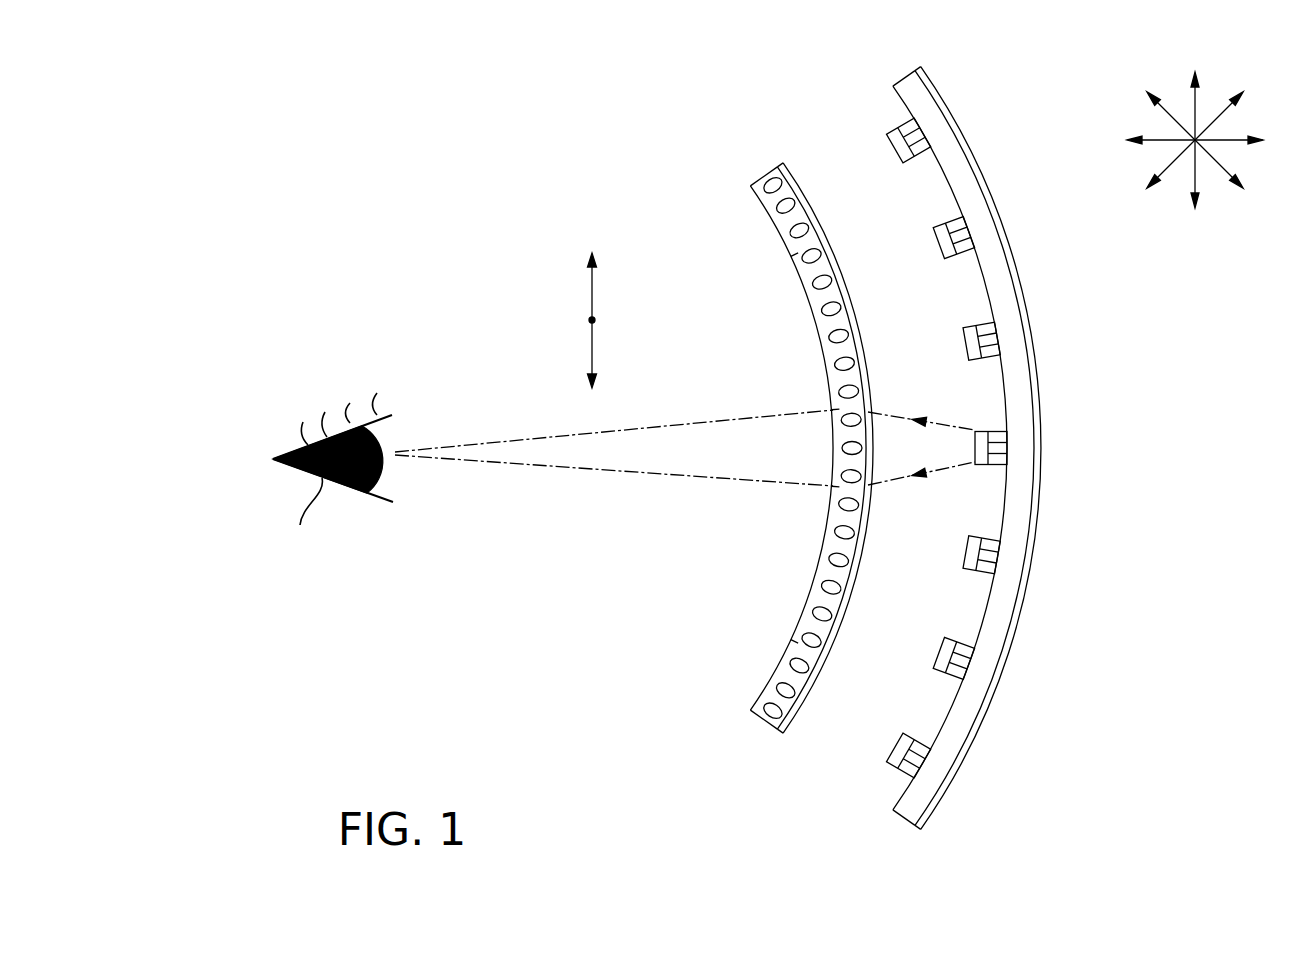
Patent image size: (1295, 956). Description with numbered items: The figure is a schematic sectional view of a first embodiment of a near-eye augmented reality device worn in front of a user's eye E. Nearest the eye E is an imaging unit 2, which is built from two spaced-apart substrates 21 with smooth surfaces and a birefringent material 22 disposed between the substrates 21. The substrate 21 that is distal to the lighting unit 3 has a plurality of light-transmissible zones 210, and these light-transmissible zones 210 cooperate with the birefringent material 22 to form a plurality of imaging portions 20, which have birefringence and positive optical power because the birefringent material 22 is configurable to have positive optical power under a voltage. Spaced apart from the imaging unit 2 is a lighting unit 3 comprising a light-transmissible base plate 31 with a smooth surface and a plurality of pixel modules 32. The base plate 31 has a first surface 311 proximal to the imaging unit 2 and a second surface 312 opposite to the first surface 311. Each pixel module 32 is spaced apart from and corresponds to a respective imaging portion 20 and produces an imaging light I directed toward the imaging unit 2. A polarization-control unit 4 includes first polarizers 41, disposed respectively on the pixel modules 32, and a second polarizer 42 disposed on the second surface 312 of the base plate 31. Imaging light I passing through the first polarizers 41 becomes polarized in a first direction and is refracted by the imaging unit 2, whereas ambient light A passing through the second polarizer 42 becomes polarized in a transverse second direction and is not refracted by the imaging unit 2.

The imaging unit 2 is at (765, 461).
The imaging portions 20 is at (748, 232).
The substrates 21 is at (757, 710).
The light-transmissible zones 210 is at (803, 612).
The birefringent material 22 is at (767, 723).
The lighting unit 3 is at (949, 437).
The light-transmissible base plate 31 is at (923, 445).
The first surface 311 is at (947, 183).
The second surface 312 is at (942, 113).
The pixel modules 32 is at (910, 448).
The polarization-control unit 4 is at (960, 464).
The first polarizers 41 is at (972, 548).
The second polarizer 42 is at (1013, 637).
The eye E is at (333, 477).
The imaging light I is at (685, 427).
The ambient light A is at (909, 230).